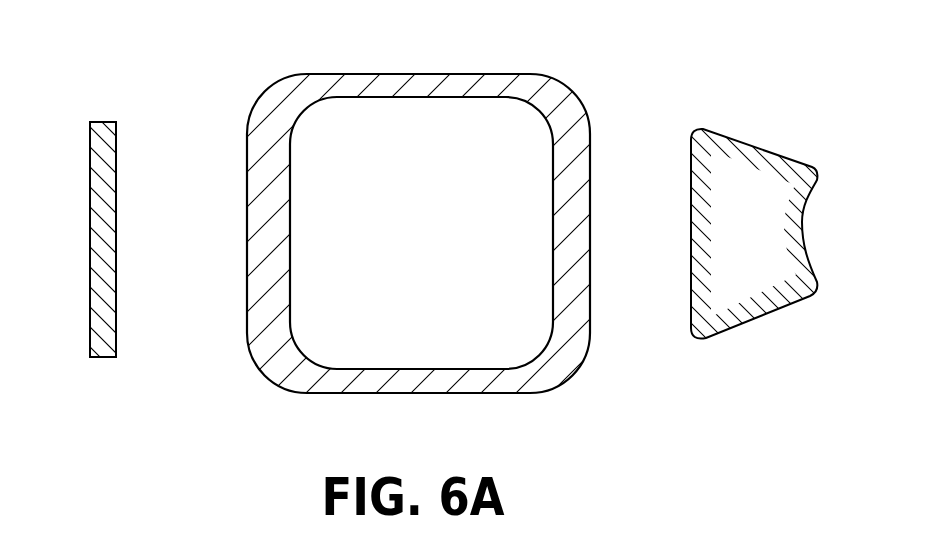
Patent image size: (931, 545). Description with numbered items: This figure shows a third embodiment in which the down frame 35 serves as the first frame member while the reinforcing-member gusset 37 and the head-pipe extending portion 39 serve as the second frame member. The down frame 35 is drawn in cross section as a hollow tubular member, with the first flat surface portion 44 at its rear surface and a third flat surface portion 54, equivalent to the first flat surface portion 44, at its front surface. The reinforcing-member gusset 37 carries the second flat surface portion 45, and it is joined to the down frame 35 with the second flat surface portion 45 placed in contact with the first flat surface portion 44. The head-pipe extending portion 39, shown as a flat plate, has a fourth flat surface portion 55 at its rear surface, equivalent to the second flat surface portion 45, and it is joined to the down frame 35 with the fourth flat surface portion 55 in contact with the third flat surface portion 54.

The down frame 35 is at (430, 73).
The reinforcing-member gusset 37 is at (757, 152).
The head-pipe extending portion 39 is at (100, 121).
The first flat surface portion 44 is at (590, 200).
The second flat surface portion 45 is at (691, 207).
The third flat surface portion 54 is at (247, 294).
The fourth flat surface portion 55 is at (116, 322).